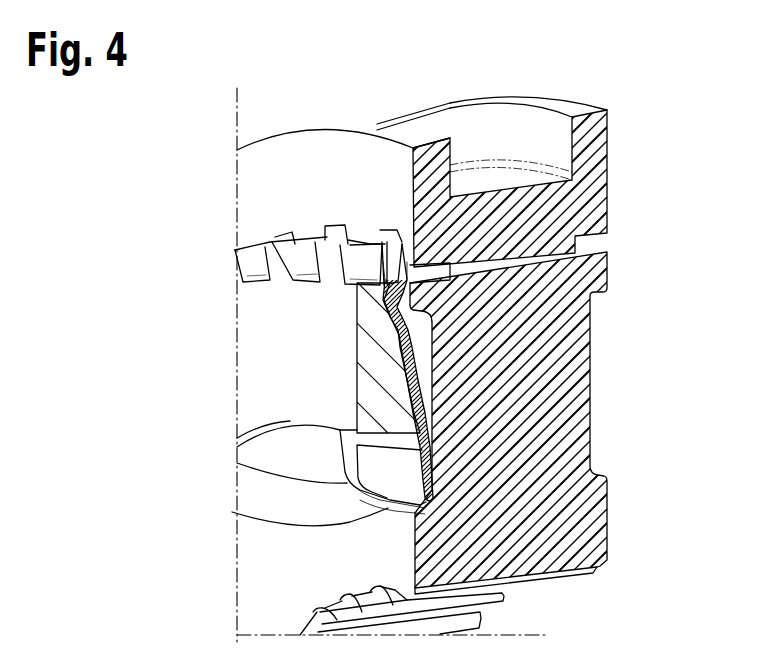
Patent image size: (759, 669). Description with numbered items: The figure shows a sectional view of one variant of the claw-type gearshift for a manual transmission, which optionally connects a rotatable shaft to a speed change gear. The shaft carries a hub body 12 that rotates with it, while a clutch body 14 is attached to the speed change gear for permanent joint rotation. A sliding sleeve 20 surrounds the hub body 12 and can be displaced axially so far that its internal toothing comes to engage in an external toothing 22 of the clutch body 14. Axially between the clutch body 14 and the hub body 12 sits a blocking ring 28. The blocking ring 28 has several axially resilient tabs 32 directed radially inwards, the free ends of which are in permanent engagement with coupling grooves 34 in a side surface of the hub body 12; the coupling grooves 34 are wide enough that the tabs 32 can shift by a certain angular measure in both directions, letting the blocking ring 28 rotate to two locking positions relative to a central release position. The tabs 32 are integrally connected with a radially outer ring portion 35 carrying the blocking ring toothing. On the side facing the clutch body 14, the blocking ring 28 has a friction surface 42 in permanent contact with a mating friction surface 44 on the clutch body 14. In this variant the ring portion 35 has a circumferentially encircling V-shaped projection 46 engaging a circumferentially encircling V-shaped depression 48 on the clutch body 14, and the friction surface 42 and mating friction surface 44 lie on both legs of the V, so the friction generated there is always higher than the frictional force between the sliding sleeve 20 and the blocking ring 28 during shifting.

The hub body 12 is at (267, 575).
The clutch body 14 is at (267, 407).
The sliding sleeve 20 is at (262, 202).
The external toothing 22 is at (247, 262).
The blocking ring 28 is at (428, 375).
The axially resilient tabs 32 is at (387, 472).
The coupling grooves 34 is at (387, 505).
The ring portion 35 is at (415, 313).
The friction surface 42 is at (254, 383).
The mating friction surface 44 is at (395, 271).
The V-shaped projection 46 is at (239, 278).
The V-shaped depression 48 is at (404, 261).